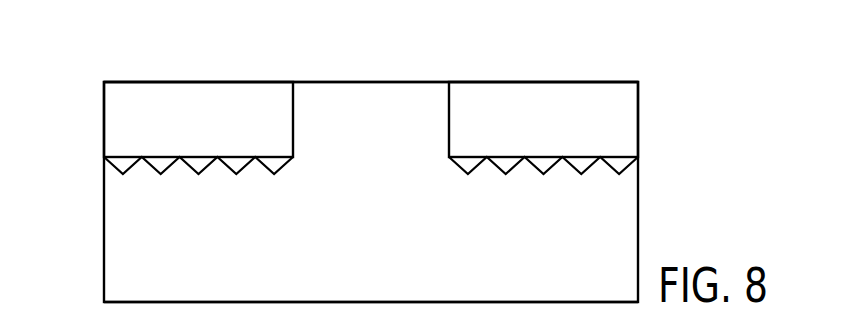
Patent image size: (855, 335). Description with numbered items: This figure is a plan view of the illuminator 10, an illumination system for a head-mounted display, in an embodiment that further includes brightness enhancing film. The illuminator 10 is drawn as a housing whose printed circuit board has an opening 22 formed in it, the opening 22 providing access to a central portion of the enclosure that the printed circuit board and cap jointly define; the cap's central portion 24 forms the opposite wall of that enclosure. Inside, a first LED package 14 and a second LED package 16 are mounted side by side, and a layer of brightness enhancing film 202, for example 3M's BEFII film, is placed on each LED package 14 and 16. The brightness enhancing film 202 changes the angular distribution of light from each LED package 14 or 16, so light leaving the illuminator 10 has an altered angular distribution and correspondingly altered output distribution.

The illumination system 10 is at (57, 79).
The first light emitting diode (LED) package 14 is at (212, 134).
The second LED package 16 is at (548, 134).
The opening 22 is at (428, 80).
The central portion 24 is at (547, 301).
The brightness enhancing film 202 is at (209, 175).